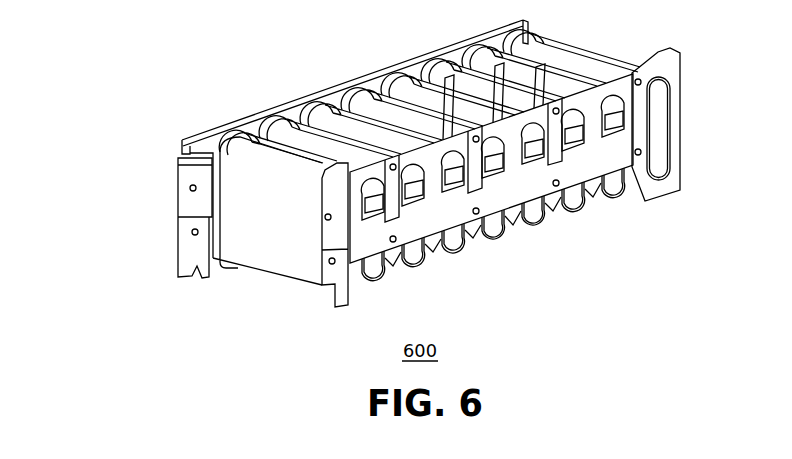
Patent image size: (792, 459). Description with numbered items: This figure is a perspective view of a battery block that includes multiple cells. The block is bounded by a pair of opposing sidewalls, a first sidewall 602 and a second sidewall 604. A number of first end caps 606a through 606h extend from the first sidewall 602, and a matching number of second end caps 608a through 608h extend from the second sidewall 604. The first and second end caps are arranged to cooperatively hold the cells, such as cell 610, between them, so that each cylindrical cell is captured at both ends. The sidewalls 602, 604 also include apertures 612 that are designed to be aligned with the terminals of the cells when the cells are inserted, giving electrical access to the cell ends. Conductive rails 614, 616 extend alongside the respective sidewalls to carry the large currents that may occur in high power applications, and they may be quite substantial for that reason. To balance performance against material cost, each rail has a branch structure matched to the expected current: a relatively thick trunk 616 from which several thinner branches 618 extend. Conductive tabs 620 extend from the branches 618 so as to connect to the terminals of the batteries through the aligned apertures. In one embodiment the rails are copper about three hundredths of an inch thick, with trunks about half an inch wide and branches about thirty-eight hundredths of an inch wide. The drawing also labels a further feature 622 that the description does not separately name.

The first sidewall 602 is at (437, 229).
The second sidewall 604 is at (484, 23).
The first end cap 606a is at (345, 163).
The first end cap 606h is at (633, 70).
The second end cap 608a is at (218, 128).
The second end cap 608h is at (512, 43).
The cell 610 is at (273, 258).
The aperture 612 is at (620, 122).
The conductive rail 614 is at (344, 230).
The trunk 616 is at (177, 182).
The branch 618 is at (430, 215).
The conductive tab 620 is at (640, 112).
The sense tab 622 is at (452, 135).